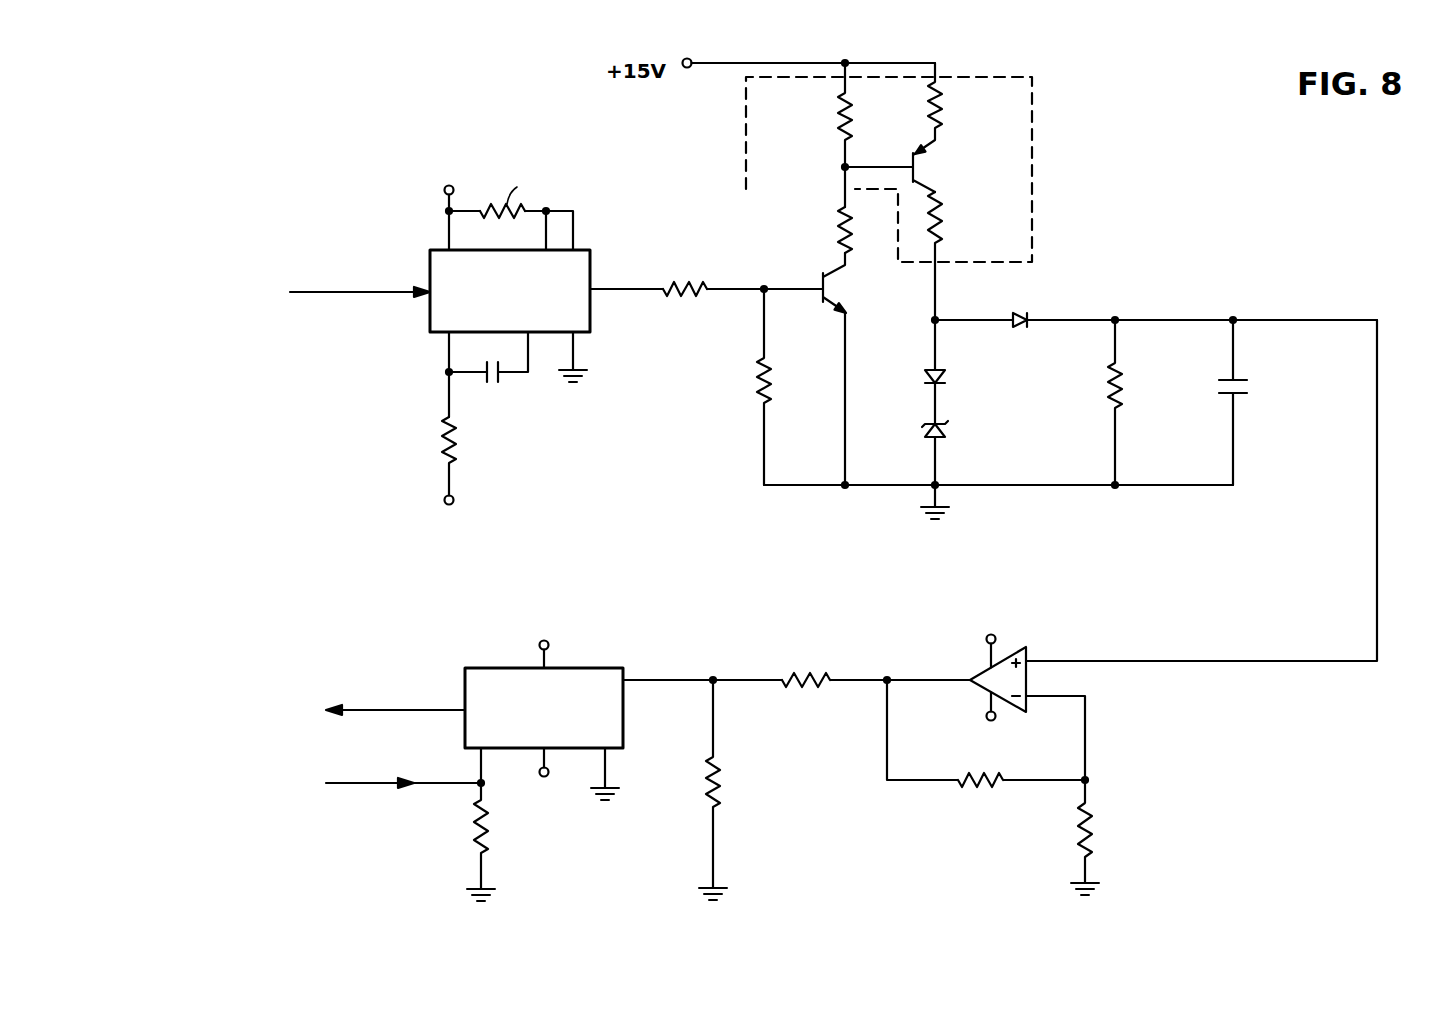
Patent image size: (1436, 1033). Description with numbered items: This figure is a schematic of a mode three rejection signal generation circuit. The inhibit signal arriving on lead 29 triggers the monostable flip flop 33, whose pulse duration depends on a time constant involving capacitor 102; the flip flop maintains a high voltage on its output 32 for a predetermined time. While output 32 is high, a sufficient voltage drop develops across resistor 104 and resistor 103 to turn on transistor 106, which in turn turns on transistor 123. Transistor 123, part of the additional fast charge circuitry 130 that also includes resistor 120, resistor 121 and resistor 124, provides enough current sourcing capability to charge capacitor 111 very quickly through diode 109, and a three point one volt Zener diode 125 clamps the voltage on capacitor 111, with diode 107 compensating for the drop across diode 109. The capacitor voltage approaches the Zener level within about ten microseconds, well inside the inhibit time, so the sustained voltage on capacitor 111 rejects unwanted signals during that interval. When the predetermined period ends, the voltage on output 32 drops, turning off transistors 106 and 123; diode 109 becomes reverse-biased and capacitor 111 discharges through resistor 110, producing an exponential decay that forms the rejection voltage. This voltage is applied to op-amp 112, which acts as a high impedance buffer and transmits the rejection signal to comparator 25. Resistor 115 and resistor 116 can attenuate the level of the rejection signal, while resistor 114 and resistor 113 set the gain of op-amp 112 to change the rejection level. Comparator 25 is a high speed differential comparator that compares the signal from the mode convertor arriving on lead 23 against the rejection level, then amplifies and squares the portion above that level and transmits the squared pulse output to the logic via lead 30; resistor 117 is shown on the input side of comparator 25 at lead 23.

The lead 29 is at (329, 292).
The flip flop 33 is at (533, 300).
The output 32 is at (605, 292).
The capacitor 102 is at (507, 387).
The resistor 103 is at (697, 277).
The resistor 104 is at (442, 427).
The transistor 106 is at (840, 282).
The diode 107 is at (944, 377).
The diode 109 is at (1018, 314).
The resistor 110 is at (1122, 386).
The capacitor 111 is at (1252, 389).
The op-amp 112 is at (1026, 647).
The resistor 113 is at (1078, 817).
The resistor 114 is at (978, 796).
The resistor 115 is at (822, 672).
The resistor 116 is at (724, 773).
The resistor 117 is at (472, 818).
The resistor 120 is at (838, 230).
The resistor 121 is at (838, 118).
The transistor 123 is at (925, 148).
The resistor 124 is at (942, 222).
The Zener diode 125 is at (946, 431).
The fast charge circuitry 130 is at (1032, 150).
The comparator 25 is at (565, 718).
The lead 30 is at (384, 710).
The lead 23 is at (364, 783).